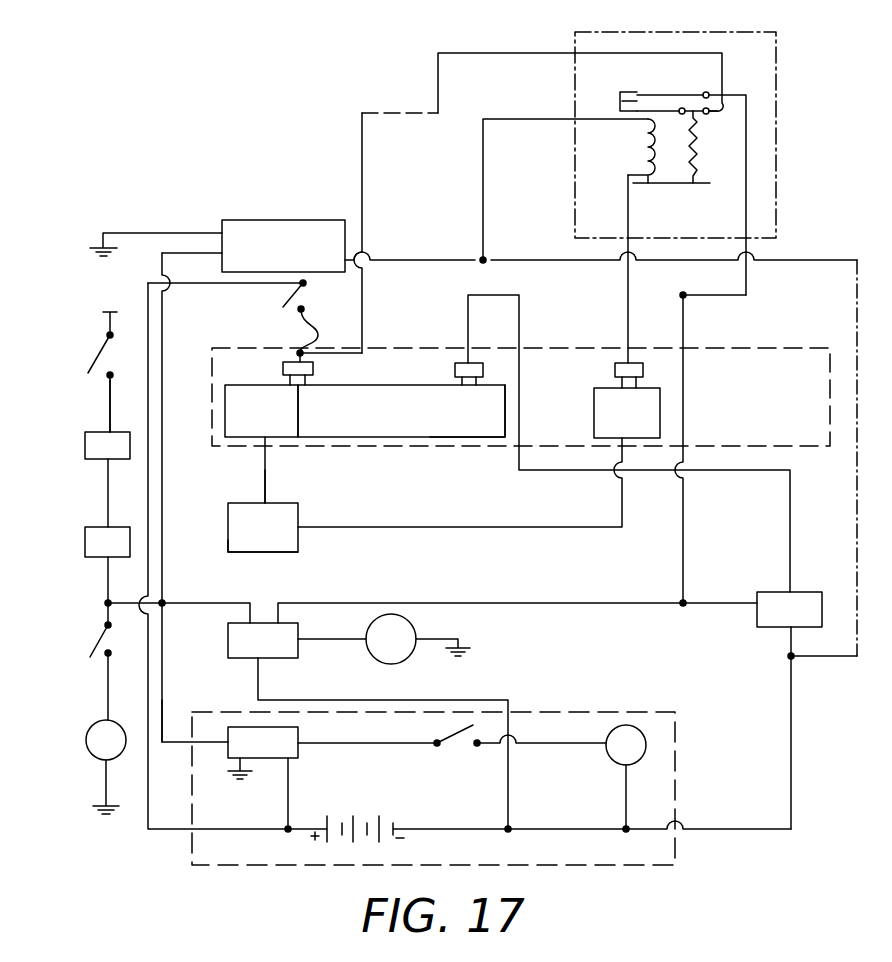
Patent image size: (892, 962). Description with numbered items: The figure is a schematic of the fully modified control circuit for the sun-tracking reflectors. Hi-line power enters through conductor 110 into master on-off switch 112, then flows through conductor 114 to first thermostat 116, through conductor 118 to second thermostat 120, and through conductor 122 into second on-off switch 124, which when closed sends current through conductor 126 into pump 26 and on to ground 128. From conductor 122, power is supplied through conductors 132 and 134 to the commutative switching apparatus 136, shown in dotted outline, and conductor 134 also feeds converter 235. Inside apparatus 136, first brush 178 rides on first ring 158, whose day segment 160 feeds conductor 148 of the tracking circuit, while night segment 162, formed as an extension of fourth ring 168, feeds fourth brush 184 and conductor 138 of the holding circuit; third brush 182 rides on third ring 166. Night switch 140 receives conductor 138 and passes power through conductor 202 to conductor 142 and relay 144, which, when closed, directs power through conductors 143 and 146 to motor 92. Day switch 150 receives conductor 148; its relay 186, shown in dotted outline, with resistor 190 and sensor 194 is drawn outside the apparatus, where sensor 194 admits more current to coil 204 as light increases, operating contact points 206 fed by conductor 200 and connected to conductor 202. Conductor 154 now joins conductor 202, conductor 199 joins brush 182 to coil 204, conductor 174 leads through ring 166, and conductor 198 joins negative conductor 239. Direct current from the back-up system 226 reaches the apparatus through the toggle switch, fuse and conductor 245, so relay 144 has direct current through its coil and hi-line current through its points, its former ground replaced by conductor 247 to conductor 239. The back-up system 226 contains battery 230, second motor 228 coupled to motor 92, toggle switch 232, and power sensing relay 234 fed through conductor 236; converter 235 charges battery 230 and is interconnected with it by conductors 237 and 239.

The pump 26 is at (97, 722).
The motor 92 is at (409, 658).
The conductor 110 is at (113, 323).
The on-off switch 112 is at (100, 357).
The conductor 114 is at (108, 408).
The first thermostat 116 is at (122, 456).
The conductor 118 is at (110, 491).
The second thermostat 120 is at (122, 553).
The conductor 122 is at (107, 578).
The second on-off switch 124 is at (98, 645).
The conductor 126 is at (107, 683).
The ground 128 is at (100, 806).
The conductor 132 is at (125, 600).
The conductor 134 is at (163, 333).
The commutative switching apparatus 136 is at (410, 325).
The conductor 138 is at (520, 433).
The night switch 140 is at (772, 621).
The conductor 142 is at (470, 603).
The conductor 143 is at (183, 600).
The relay 144 is at (246, 652).
The conductor 146 is at (313, 640).
The conductor 148 is at (267, 492).
The day switch 150 is at (603, 138).
The conductor 154 is at (685, 342).
The first ring 158 is at (298, 438).
The day segment 160 is at (238, 422).
The night segment 162 is at (315, 422).
The third ring 166 is at (603, 424).
The fourth ring 168 is at (448, 422).
The conductor 174 is at (622, 497).
The first brush 178 is at (283, 365).
The third brush 182 is at (613, 373).
The fourth brush 184 is at (453, 370).
The relay 186 is at (777, 122).
The resistor 190 is at (246, 527).
The sensor 194 is at (246, 549).
The conductor 198 is at (485, 232).
The conductor 199 is at (627, 298).
The conductor 200 is at (362, 150).
The conductor 202 is at (747, 290).
The coil 204 is at (662, 185).
The contact points 206 is at (617, 92).
The back-up system 226 is at (680, 755).
The second motor 228 is at (610, 762).
The battery 230 is at (360, 815).
The toggle switch 232 is at (450, 735).
The power sensing relay 234 is at (246, 754).
The converter 235 is at (265, 262).
The conductor 236 is at (160, 700).
The conductor 237 is at (147, 286).
The conductor 239 is at (425, 258).
The toggle switch, fuse and conductor 245 is at (322, 318).
The conductor 247 is at (488, 700).